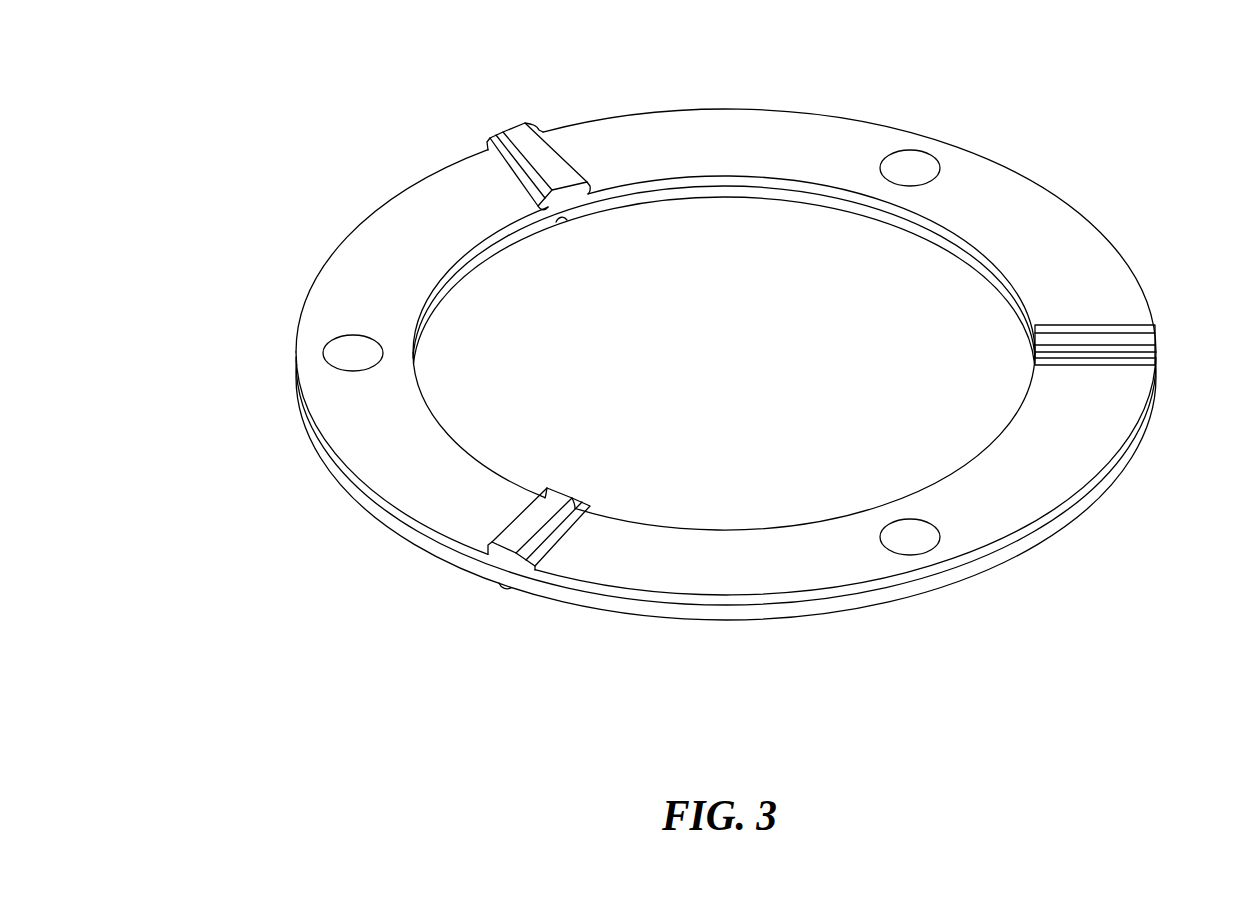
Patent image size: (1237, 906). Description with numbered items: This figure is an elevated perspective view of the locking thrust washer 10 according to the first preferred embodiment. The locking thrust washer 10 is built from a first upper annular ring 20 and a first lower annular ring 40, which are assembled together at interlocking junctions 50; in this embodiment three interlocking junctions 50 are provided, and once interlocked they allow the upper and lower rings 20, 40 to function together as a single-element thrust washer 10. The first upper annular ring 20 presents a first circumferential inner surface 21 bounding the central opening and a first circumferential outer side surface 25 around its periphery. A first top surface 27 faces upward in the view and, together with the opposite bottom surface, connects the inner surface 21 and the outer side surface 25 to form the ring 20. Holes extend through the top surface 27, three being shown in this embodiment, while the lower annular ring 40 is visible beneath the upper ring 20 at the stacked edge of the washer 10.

The locking thrust washer 10 is at (1083, 120).
The first upper annular ring 20 is at (1073, 208).
The first circumferential inner surface 21 is at (697, 178).
The first circumferential outer side surface 25 is at (752, 604).
The first top surface 27 is at (388, 459).
The first lower annular ring 40 is at (1083, 503).
The interlocking junctions 50 is at (935, 160).